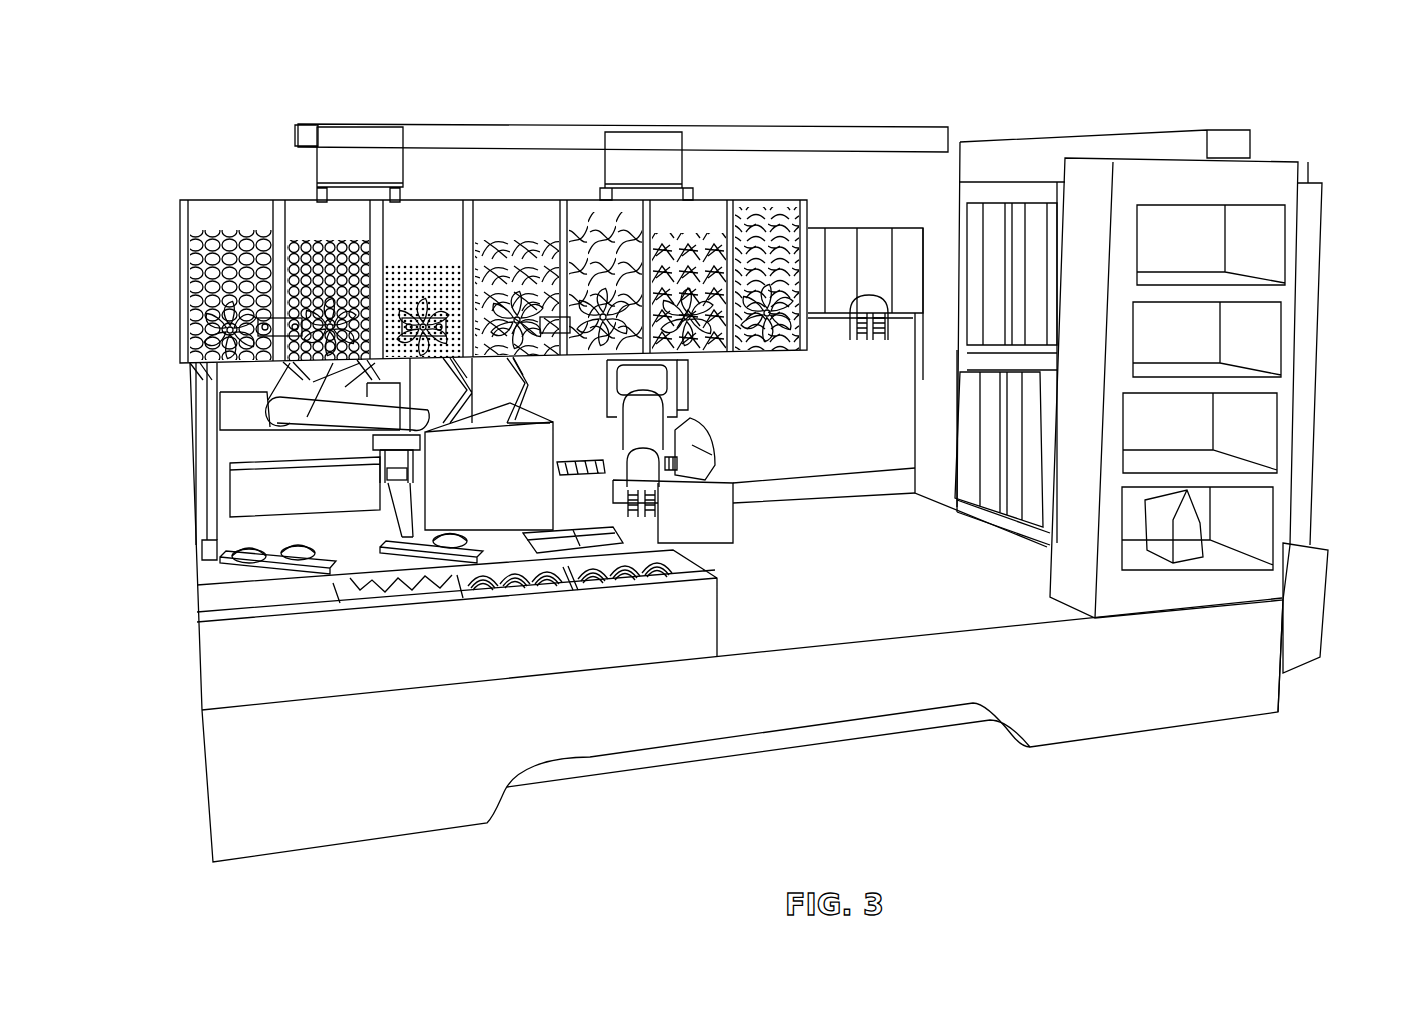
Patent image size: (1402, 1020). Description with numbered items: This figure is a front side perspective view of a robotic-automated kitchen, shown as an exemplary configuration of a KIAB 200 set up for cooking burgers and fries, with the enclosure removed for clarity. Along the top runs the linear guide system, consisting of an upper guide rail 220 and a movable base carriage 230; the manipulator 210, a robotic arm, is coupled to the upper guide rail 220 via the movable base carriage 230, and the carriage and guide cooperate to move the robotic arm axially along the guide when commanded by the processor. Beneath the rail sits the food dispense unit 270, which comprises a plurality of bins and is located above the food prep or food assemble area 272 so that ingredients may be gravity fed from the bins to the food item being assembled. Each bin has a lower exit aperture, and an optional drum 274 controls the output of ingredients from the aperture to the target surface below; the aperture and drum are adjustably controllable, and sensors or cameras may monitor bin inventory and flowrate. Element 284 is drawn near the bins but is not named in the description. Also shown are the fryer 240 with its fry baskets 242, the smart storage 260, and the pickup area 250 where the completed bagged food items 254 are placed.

The KIAB 200 is at (192, 68).
The upper guide rail 220 is at (440, 127).
The movable base carriage 230 is at (651, 146).
The smart storage 260 is at (1006, 152).
The pickup area 250 is at (1299, 173).
The drum 274 is at (337, 302).
The food dispense unit 270 is at (172, 245).
The dispensing chute 284 is at (247, 366).
The fry baskets 242 is at (437, 392).
The fryer 240 is at (515, 496).
The food prep or food assemble area 272 is at (347, 563).
The completed bagged food items 254 is at (1205, 525).
The manipulator 210 is at (643, 440).